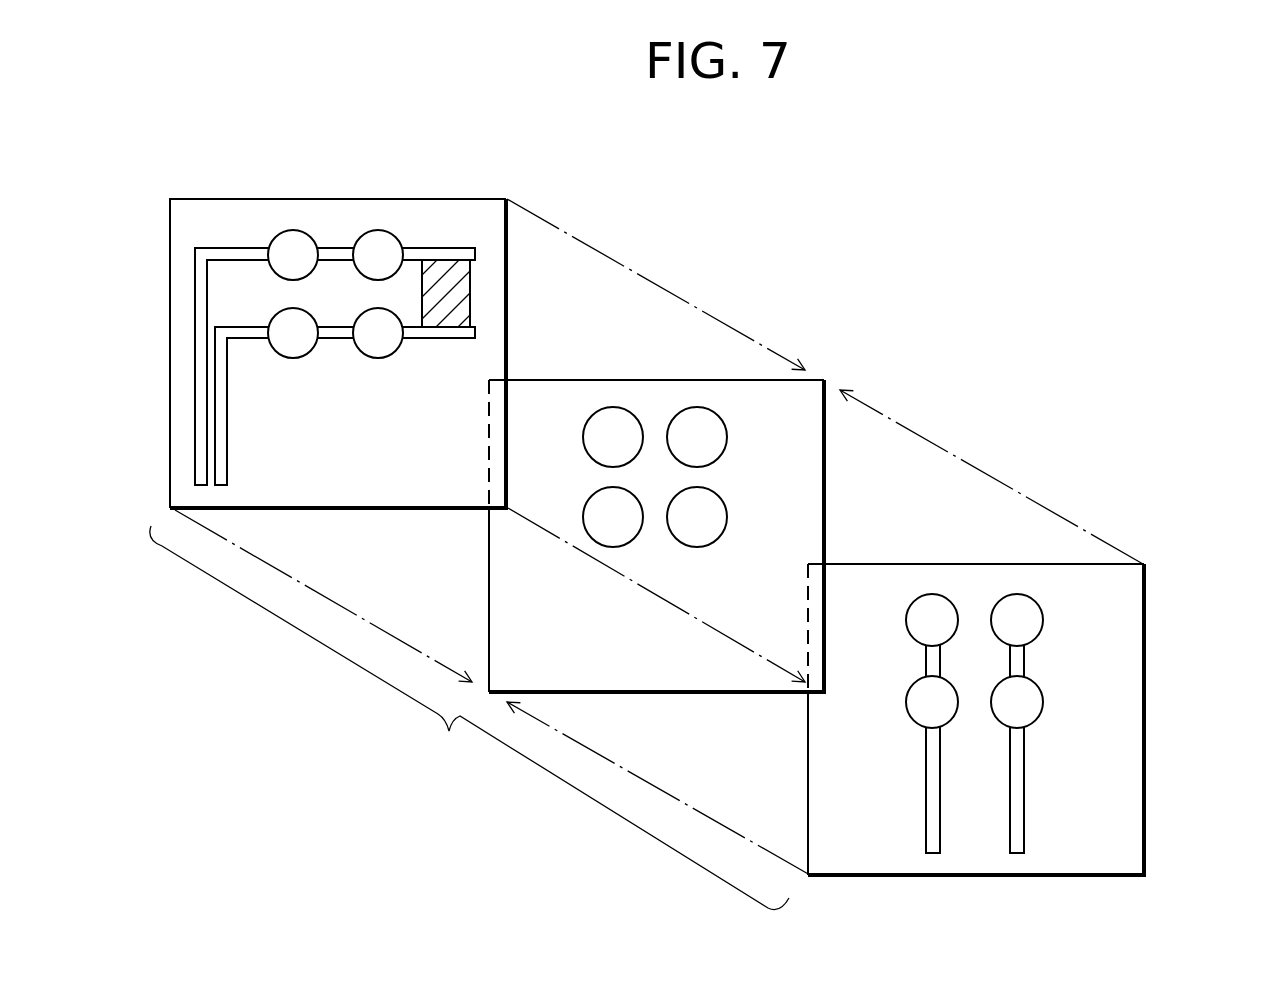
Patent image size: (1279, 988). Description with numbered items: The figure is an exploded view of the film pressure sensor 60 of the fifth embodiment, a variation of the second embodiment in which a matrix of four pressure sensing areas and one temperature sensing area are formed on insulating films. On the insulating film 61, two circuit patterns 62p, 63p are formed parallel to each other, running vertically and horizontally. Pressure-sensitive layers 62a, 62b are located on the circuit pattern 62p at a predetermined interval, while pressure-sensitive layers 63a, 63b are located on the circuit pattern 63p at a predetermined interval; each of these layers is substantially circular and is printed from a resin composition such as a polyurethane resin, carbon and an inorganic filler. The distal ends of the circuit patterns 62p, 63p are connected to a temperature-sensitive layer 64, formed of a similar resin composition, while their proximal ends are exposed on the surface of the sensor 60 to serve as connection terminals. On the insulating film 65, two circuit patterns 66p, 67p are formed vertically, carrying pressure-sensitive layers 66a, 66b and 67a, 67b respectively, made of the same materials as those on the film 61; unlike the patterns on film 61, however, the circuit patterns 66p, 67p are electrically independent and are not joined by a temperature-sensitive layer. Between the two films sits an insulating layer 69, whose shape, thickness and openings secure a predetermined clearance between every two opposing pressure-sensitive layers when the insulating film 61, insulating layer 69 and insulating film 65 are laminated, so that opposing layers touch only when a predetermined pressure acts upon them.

The film pressure sensor 60 is at (469, 718).
The insulating film 61 is at (190, 218).
The pressure-sensitive layer 62a is at (291, 243).
The pressure-sensitive layer 62b is at (380, 243).
The circuit pattern 62p is at (202, 304).
The pressure-sensitive layer 63a is at (275, 325).
The pressure-sensitive layer 63b is at (368, 323).
The circuit pattern 63p is at (223, 411).
The temperature-sensitive layer 64 is at (443, 280).
The insulating film 65 is at (1127, 795).
The pressure-sensitive layer 66a is at (932, 612).
The pressure-sensitive layer 66b is at (917, 702).
The circuit pattern 66p is at (932, 853).
The pressure-sensitive layer 67a is at (1035, 622).
The pressure-sensitive layer 67b is at (1035, 700).
The circuit pattern 67p is at (1017, 853).
The insulating layer 69 is at (486, 570).